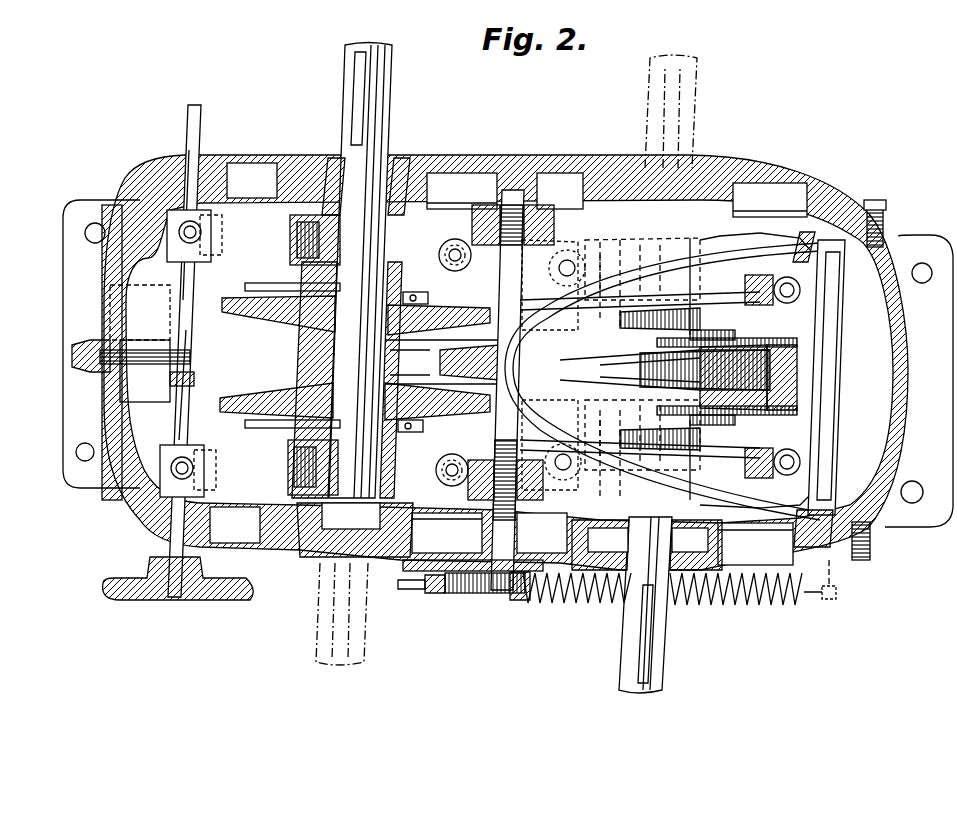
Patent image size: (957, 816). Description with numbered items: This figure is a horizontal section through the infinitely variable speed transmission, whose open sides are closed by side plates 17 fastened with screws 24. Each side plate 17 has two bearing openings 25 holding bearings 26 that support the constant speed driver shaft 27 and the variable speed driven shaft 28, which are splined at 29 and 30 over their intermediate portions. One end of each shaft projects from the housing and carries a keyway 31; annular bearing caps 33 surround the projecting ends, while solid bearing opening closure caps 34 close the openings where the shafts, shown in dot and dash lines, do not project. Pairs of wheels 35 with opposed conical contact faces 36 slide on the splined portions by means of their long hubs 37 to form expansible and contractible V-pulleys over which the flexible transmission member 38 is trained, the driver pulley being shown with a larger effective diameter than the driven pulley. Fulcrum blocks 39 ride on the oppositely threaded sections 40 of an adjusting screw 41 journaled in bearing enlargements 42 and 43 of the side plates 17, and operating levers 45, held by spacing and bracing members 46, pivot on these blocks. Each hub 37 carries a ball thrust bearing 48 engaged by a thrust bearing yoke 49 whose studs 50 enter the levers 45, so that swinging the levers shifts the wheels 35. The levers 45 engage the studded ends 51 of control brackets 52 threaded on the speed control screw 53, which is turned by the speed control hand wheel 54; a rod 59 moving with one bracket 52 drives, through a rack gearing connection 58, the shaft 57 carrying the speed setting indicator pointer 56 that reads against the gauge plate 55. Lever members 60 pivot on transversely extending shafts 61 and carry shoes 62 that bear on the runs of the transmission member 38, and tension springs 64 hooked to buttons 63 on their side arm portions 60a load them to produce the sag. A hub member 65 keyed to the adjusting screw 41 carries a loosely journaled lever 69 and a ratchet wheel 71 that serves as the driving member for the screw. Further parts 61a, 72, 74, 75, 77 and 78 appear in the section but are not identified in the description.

The side plate 17 is at (462, 166).
The screws 24 is at (880, 205).
The bearing opening 25 is at (424, 190).
The bearing 26 is at (420, 204).
The constant speed driver shaft 27 is at (666, 672).
The variable speed driven shaft 28 is at (346, 131).
The splined portion 29 is at (695, 368).
The splined portion 30 is at (385, 356).
The keyway 31 is at (378, 110).
The annular bearing cap 33 is at (393, 163).
The solid bearing cap 34 is at (690, 182).
The wheel 35 is at (284, 302).
The conical contact surface 36 is at (262, 360).
The hub 37 is at (400, 242).
The flexible transmission member 38 is at (292, 352).
The fulcrum block 39 is at (548, 242).
The oppositely threaded section 40 is at (505, 276).
The adjusting screw 41 is at (536, 318).
The bearing enlargement 42 is at (538, 202).
The bearing enlargement 43 is at (527, 547).
The operating lever 45 is at (586, 246).
The spacing and bracing member 46 is at (455, 271).
The ball thrust bearing 48 is at (428, 298).
The thrust bearing yoke 49 is at (290, 236).
The stud 50 is at (700, 250).
The studded end 51 is at (178, 240).
The control bracket 52 is at (208, 242).
The speed control screw 53 is at (168, 552).
The speed control hand wheel 54 is at (172, 605).
The speed control gauge plate 55 is at (102, 258).
The speed setting indicator pointer 56 is at (96, 400).
The shaft 57 is at (170, 340).
The rack gearing connection 58 is at (192, 350).
The rod 59 is at (196, 380).
The lever member 60 is at (728, 513).
The side arm portion 60a is at (792, 254).
The transversely extending shaft 61 is at (838, 358).
The plate bolt 61a is at (800, 232).
The shoe 62 is at (470, 362).
The button 63 is at (787, 304).
The tension spring 64 is at (755, 302).
The hub member 65 is at (496, 600).
The lever 69 is at (410, 590).
The ratchet wheel 71 is at (528, 600).
The sleeve 72 is at (462, 596).
The spring 74 is at (742, 607).
The stop 75 is at (832, 600).
The washer 77 is at (434, 594).
The flange 78 is at (405, 572).